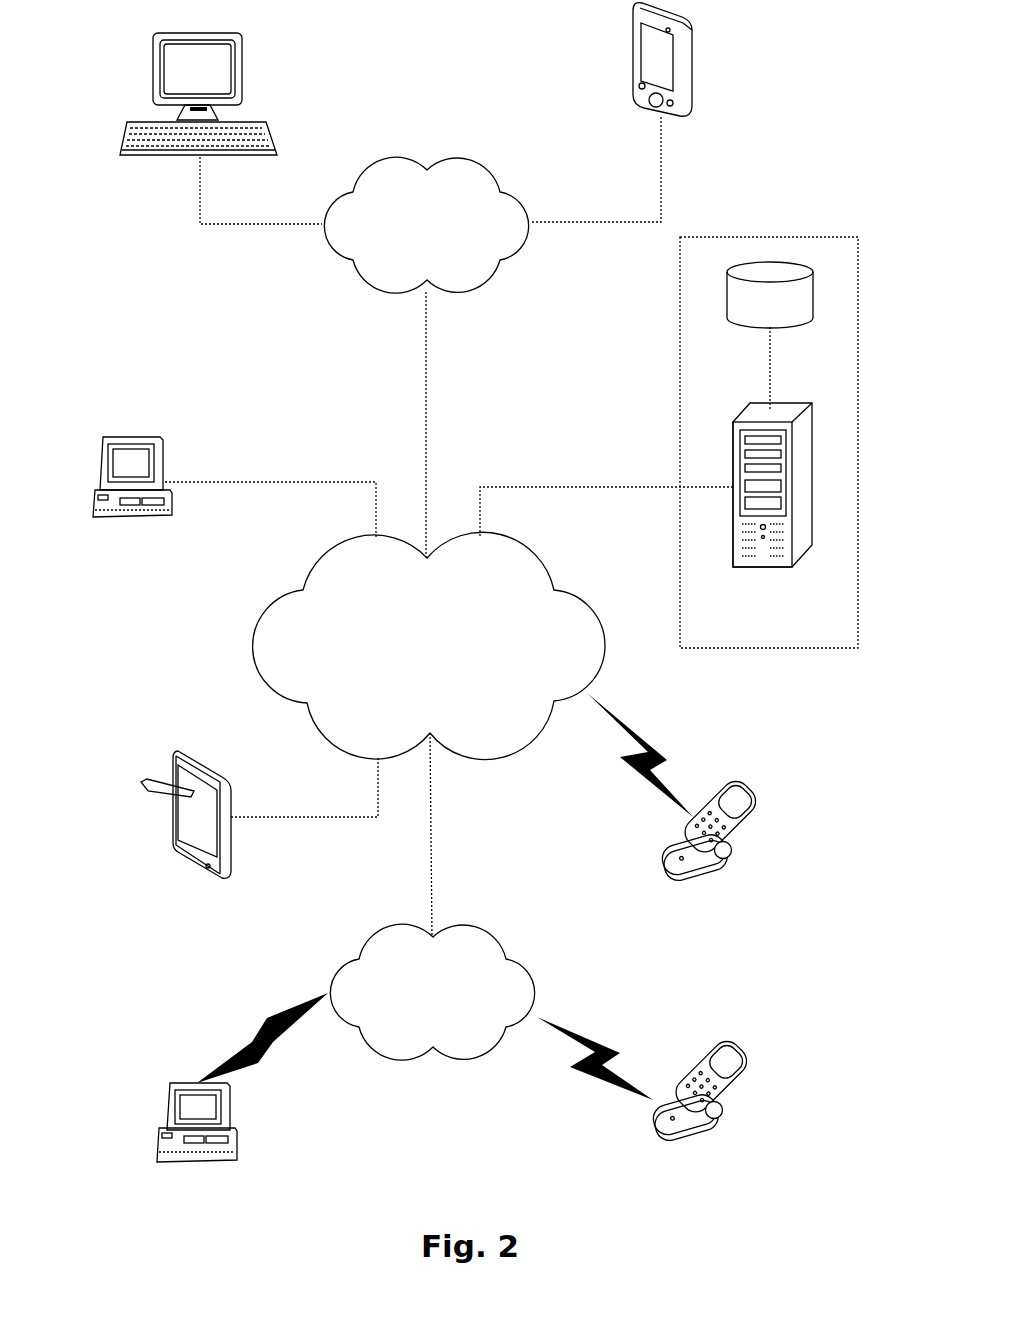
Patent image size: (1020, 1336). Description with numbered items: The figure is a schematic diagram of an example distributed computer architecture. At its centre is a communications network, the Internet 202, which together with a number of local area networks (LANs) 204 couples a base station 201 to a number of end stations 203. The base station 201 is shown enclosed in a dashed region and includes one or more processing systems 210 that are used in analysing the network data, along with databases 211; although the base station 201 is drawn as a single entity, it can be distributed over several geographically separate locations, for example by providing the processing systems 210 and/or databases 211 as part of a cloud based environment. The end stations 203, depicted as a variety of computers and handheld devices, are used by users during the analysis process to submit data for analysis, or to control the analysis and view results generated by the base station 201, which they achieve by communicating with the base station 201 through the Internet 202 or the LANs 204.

The base station 201 is at (769, 464).
The Internet 202 is at (429, 645).
The end stations 203 is at (427, 599).
The local area networks 204 is at (429, 608).
The processing systems 210 is at (772, 506).
The databases 211 is at (770, 295).